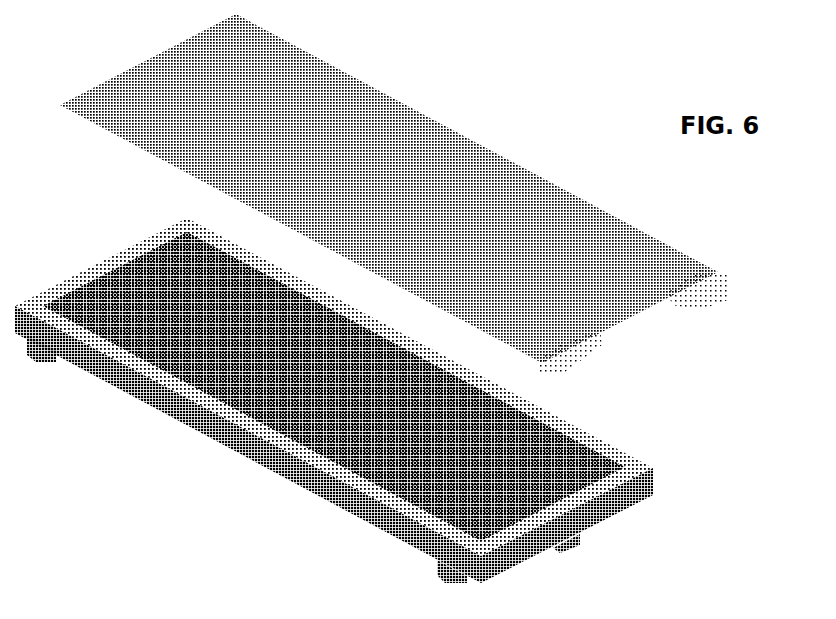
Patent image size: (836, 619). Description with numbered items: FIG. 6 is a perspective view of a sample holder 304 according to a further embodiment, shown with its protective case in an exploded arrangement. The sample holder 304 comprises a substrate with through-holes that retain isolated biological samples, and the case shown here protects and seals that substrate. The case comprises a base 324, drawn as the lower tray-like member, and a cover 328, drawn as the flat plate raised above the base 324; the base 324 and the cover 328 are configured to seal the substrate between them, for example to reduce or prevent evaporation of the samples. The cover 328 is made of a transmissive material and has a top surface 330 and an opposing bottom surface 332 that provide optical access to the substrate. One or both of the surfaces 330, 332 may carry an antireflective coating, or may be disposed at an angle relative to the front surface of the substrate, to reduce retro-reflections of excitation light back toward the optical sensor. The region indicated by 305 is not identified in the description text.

The sample holder 304 is at (61, 42).
The cover 328 is at (395, 193).
The top surface 330 is at (440, 182).
The bottom surface 332 is at (152, 182).
The base 324 is at (626, 503).
The tray interior cavity 305 is at (152, 298).